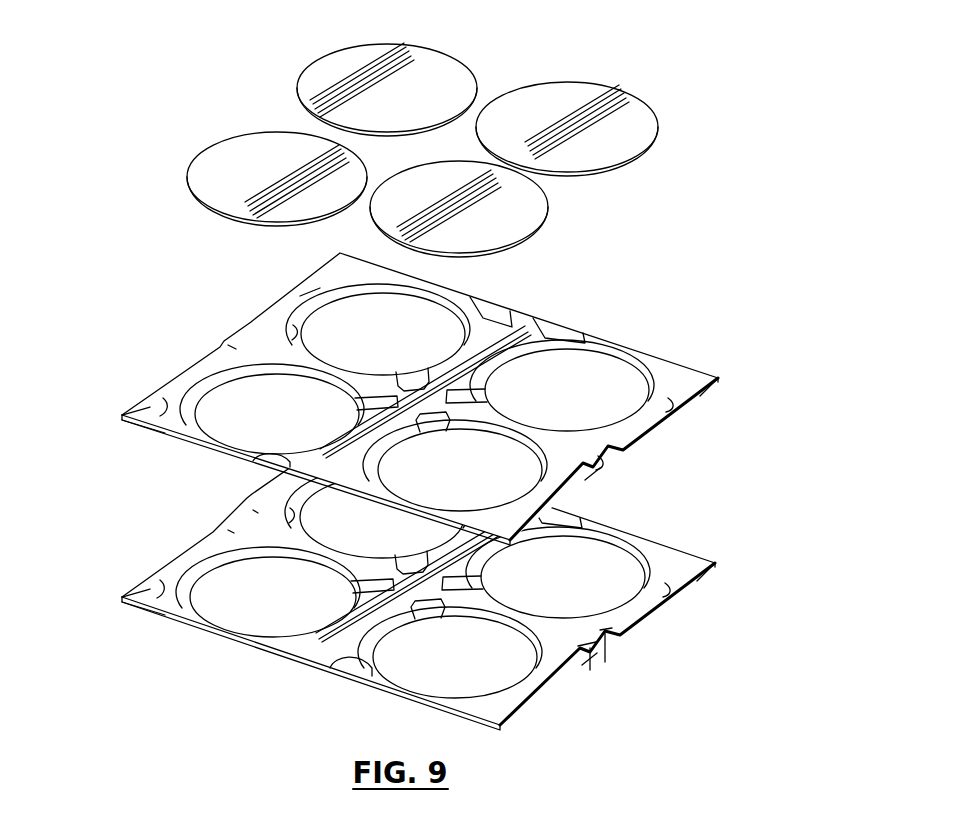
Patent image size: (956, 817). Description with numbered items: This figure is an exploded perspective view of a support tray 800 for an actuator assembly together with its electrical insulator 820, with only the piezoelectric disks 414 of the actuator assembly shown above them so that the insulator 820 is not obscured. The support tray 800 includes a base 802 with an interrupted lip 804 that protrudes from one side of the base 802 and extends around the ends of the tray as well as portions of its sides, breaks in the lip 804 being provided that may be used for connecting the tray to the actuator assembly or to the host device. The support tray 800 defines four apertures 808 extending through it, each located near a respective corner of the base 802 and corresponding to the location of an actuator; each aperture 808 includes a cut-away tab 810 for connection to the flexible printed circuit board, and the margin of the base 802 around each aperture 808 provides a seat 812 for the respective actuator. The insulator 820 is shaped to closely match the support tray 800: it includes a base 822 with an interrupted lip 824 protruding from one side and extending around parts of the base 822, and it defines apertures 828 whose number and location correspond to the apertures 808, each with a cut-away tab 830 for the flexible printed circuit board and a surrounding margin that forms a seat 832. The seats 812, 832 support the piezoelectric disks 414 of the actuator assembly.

The piezoelectric disk 414 is at (323, 67).
The support tray 800 is at (690, 558).
The base 802 is at (322, 670).
The interrupted lip 804 is at (122, 600).
The aperture 808 is at (270, 470).
The cut-away tab 810 is at (410, 565).
The seat 812 is at (195, 558).
The electrical insulator 820 is at (685, 385).
The base 822 is at (497, 338).
The interrupted lip 824 is at (150, 407).
The aperture 828 is at (300, 296).
The cut-away tab 830 is at (402, 383).
The seat 832 is at (293, 325).